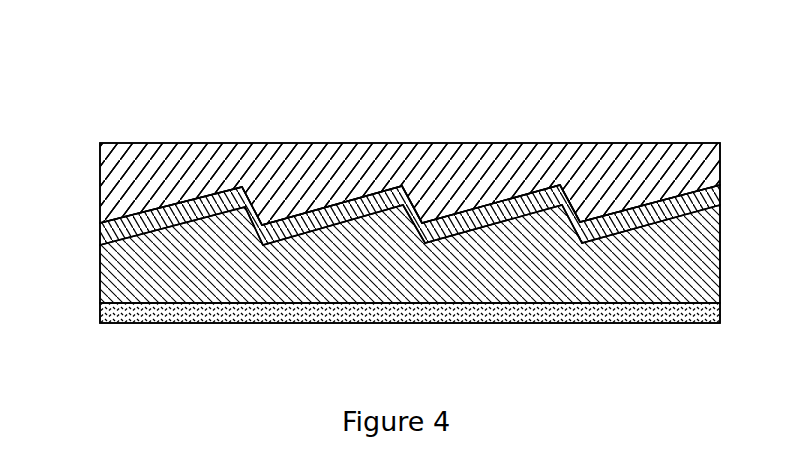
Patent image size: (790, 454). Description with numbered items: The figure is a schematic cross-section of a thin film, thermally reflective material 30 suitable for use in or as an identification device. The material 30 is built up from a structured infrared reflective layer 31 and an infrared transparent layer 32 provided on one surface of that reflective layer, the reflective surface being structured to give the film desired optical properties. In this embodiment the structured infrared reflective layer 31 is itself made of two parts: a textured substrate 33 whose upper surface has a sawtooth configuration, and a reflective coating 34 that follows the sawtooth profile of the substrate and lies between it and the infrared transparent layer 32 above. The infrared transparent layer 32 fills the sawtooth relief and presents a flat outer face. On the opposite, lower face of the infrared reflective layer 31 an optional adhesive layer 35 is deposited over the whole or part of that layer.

The material 30 is at (582, 105).
The structured infrared reflective layer 31 is at (82, 225).
The infrared transparent layer 32 is at (618, 185).
The textured substrate 33 is at (223, 267).
The reflective coating 34 is at (360, 197).
The adhesive layer 35 is at (490, 322).